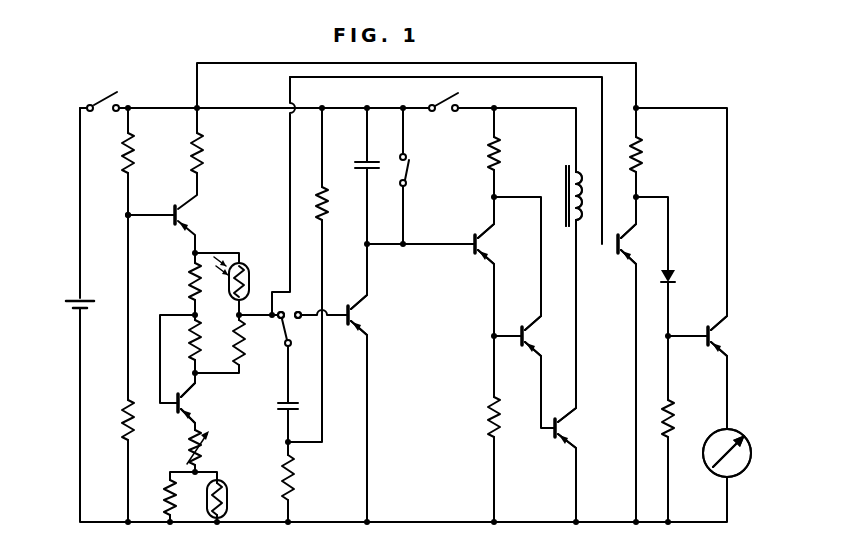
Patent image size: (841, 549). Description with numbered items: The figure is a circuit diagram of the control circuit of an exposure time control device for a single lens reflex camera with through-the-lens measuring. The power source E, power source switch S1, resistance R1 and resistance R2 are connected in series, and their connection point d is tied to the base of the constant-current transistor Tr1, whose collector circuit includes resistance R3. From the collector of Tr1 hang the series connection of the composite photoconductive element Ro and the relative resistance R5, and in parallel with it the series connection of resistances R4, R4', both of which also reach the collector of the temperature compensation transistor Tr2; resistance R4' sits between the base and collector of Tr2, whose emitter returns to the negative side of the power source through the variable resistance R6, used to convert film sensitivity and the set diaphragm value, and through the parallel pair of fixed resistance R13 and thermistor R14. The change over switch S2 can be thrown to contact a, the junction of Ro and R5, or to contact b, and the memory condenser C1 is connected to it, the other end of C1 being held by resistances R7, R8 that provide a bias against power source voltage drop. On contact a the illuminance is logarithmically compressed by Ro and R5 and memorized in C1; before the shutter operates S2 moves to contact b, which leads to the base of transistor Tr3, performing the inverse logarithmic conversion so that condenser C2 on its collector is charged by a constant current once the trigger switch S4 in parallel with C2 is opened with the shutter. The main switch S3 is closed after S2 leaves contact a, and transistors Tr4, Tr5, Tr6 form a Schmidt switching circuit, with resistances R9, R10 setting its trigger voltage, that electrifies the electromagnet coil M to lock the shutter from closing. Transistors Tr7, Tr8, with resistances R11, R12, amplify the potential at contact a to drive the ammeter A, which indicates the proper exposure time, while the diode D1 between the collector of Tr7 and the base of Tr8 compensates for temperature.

The power source switch S1 is at (110, 104).
The power source E is at (74, 298).
The resistance R1 is at (124, 150).
The resistance R2 is at (122, 414).
The resistance R3 is at (204, 142).
The connection point d is at (119, 215).
The constant-current transistor Tr1 is at (186, 214).
The resistance R4 is at (182, 283).
The resistance R4' is at (211, 340).
The composite photoconductive element Ro is at (250, 282).
The relative resistance R5 is at (245, 344).
The temperature compensation transistor Tr2 is at (189, 402).
The variable resistance R6 is at (203, 452).
The fixed resistance R13 is at (164, 506).
The thermistor R14 is at (225, 511).
The memory condenser C1 is at (280, 403).
The change over switch S2 is at (303, 333).
The contact a is at (281, 318).
The contact b is at (295, 313).
The resistance R7 is at (333, 205).
The resistance R8 is at (294, 470).
The condenser C2 is at (381, 165).
The main switch S3 is at (452, 111).
The trigger switch S4 is at (408, 162).
The transistor for inverse logarithmic conversion Tr3 is at (359, 314).
The resistance R9 is at (500, 162).
The transistor Tr4 is at (485, 244).
The electromagnet coil M is at (564, 194).
The transistor Tr5 is at (532, 340).
The resistance R10 is at (489, 425).
The transistor Tr6 is at (566, 430).
The resistance R11 is at (652, 164).
The transistor Tr7 is at (622, 247).
The diode D1 is at (674, 286).
The transistor Tr8 is at (724, 339).
The resistance R12 is at (674, 428).
The ammeter A is at (736, 432).